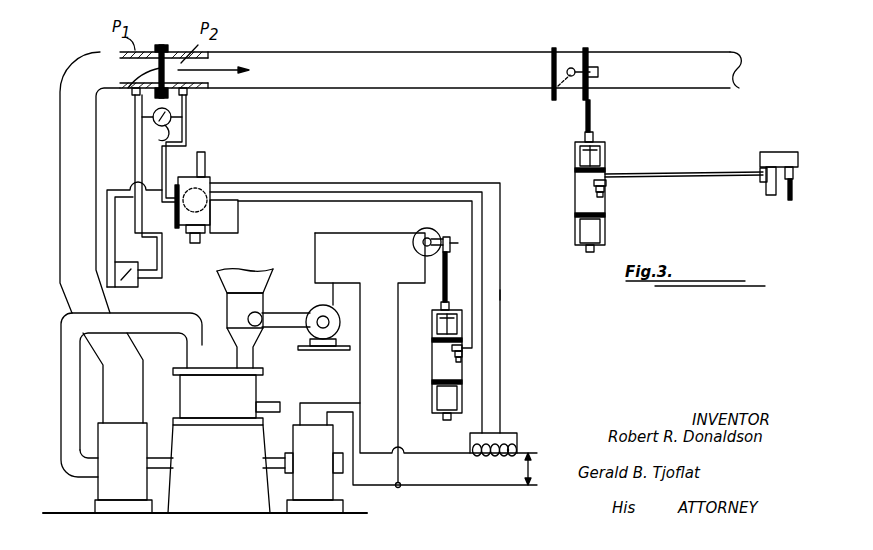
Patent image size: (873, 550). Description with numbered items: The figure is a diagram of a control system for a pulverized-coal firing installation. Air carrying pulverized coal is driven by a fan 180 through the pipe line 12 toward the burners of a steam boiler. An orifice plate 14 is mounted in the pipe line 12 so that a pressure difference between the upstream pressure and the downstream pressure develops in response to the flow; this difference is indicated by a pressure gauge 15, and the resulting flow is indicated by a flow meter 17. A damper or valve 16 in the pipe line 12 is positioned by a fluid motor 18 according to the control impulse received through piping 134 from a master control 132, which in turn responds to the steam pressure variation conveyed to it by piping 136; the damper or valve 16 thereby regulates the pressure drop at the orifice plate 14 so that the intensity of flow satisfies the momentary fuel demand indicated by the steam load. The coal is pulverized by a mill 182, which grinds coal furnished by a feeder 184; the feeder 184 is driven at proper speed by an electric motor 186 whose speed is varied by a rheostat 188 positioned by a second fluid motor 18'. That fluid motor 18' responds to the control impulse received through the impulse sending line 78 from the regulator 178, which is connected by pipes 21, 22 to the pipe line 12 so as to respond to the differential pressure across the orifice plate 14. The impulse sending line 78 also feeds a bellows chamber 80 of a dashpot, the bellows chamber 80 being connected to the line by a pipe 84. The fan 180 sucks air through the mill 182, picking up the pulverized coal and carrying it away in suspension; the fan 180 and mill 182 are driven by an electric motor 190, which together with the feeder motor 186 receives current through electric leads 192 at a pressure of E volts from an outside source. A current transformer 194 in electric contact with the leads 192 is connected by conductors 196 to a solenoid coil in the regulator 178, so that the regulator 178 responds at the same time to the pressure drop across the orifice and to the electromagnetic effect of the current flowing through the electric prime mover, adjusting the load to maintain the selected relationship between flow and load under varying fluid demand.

The pipe line 12 is at (289, 51).
The orifice plate 14 is at (132, 87).
The pressure gauge 15 is at (157, 138).
The damper or valve 16 is at (571, 67).
The flow meter 17 is at (139, 288).
The fluid motor 18 is at (572, 176).
The fluid motor 18' is at (433, 361).
The pipe 21 is at (135, 152).
The pipe 22 is at (187, 117).
The impulse sending line 78 is at (338, 195).
The bellows chamber 80 is at (195, 244).
The pipe 84 is at (238, 232).
The master control 132 is at (779, 152).
The piping 134 is at (655, 172).
The piping 136 is at (794, 198).
The regulator 178 is at (208, 178).
The fan 180 is at (143, 437).
The mill 182 is at (238, 401).
The feeder 184 is at (256, 312).
The electric motor 186 is at (313, 352).
The rheostat 188 is at (432, 233).
The electric motor 190 is at (328, 467).
The electric leads 192 is at (441, 458).
The current transformer 194 is at (500, 449).
The conductors 196 is at (500, 293).